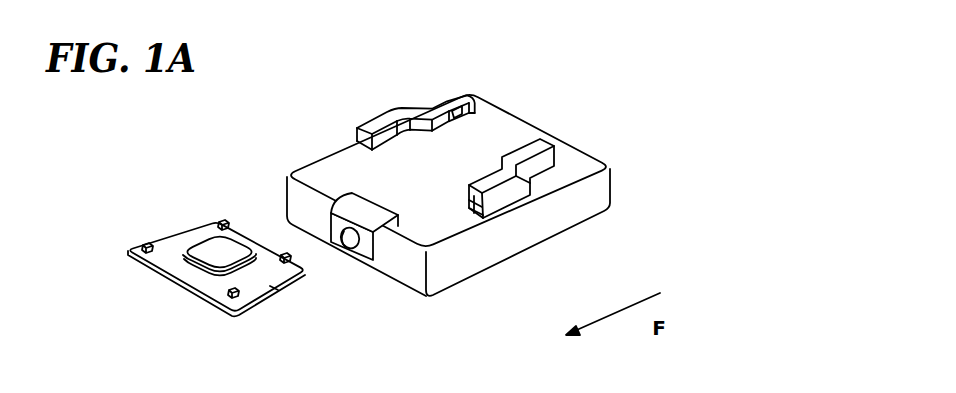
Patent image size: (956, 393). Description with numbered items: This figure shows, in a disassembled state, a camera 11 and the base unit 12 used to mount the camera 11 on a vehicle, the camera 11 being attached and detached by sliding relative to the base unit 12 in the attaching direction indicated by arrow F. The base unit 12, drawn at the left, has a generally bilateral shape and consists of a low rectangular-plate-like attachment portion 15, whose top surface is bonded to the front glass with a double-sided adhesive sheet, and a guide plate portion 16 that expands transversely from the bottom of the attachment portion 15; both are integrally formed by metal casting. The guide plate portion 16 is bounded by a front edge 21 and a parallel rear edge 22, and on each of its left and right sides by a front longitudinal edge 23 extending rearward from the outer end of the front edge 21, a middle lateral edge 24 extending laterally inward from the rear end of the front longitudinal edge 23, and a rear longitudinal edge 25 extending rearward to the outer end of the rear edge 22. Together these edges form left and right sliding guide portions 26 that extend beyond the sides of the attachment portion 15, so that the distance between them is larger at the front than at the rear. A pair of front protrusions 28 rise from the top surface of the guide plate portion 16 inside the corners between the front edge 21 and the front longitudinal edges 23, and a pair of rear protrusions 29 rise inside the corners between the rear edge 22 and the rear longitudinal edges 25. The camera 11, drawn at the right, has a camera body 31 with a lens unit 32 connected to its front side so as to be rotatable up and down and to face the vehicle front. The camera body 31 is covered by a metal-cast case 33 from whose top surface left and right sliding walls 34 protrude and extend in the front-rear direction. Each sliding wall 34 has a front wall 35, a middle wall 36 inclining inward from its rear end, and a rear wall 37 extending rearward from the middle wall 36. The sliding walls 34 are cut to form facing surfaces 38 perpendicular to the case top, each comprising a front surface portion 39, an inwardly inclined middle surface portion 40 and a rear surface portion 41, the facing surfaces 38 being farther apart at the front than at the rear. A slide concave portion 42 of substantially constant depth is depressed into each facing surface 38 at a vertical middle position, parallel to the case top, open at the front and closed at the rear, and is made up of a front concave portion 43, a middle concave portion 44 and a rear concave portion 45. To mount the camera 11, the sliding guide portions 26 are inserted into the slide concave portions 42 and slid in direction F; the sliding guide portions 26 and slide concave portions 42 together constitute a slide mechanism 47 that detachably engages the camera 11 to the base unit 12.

The camera 11 is at (541, 249).
The base unit 12 is at (146, 287).
The attachment portion 15 is at (213, 248).
The guide plate portion 16 is at (192, 278).
The front edge 21 is at (202, 303).
The rear edge 22 is at (264, 240).
The front longitudinal edge 23 is at (146, 240).
The middle lateral edge 24 is at (177, 232).
The rear longitudinal edge 25 is at (218, 213).
The sliding guide portion 26 is at (162, 240).
The front protrusion 28 is at (143, 247).
The rear protrusion 29 is at (229, 220).
The camera body 31 is at (520, 95).
The lens unit 32 is at (348, 210).
The case 33 is at (461, 268).
The sliding wall 34 is at (404, 108).
The front wall 35 is at (385, 113).
The middle wall 36 is at (420, 110).
The rear wall 37 is at (447, 100).
The facing surface 38 is at (476, 118).
The front surface portion 39 is at (375, 119).
The middle surface portion 40 is at (427, 110).
The rear surface portion 41 is at (458, 94).
The slide concave portion 42 is at (505, 132).
The front concave portion 43 is at (385, 137).
The middle concave portion 44 is at (415, 133).
The rear concave portion 45 is at (447, 123).
The slide mechanism 47 is at (511, 178).